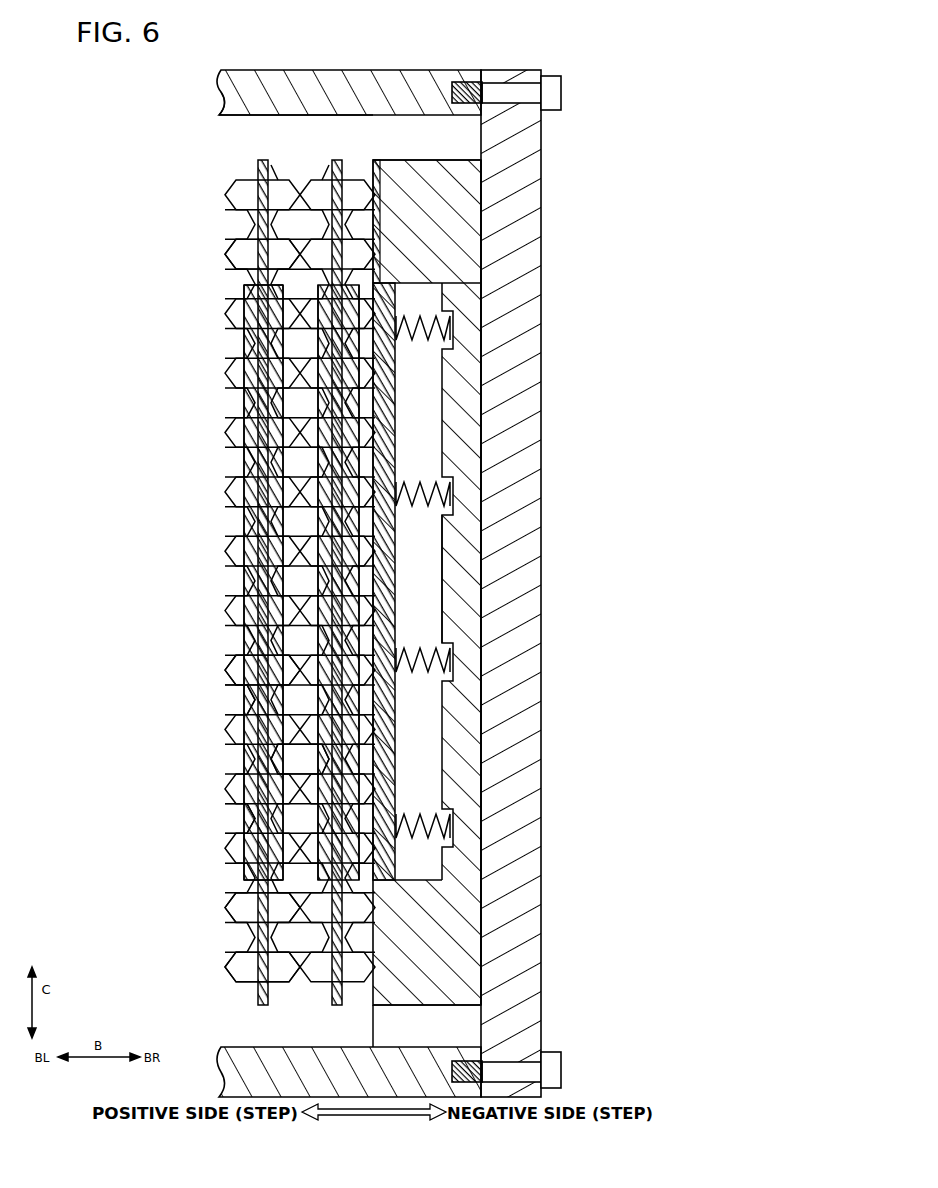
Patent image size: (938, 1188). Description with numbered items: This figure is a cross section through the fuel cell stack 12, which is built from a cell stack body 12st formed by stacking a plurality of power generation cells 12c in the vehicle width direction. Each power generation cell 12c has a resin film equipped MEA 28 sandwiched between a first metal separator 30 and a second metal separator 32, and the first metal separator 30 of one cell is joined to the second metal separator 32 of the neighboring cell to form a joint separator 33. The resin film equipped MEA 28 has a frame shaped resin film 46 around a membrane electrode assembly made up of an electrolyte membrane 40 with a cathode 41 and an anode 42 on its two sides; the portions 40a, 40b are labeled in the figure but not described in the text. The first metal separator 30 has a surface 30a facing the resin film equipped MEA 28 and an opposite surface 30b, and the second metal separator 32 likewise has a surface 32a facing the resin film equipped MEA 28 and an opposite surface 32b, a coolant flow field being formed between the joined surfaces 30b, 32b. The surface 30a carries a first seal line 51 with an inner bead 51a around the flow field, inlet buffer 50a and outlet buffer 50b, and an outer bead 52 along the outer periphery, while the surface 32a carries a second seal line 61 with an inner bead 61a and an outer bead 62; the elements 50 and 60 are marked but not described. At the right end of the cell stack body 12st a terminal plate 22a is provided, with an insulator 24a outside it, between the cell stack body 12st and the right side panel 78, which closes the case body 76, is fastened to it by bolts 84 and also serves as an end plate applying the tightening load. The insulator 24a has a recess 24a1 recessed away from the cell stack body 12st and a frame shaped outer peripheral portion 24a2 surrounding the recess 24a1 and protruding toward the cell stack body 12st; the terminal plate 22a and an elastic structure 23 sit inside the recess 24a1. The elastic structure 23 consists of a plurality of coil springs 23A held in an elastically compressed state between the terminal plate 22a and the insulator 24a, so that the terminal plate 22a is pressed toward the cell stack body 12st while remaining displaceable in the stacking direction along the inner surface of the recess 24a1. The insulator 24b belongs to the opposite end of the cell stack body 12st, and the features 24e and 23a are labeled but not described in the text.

The fuel cell stack 12 is at (551, 36).
The cell stack body 12st is at (213, 140).
The power generation cell 12c is at (225, 172).
The joint separator 33 is at (332, 40).
The second metal separator 32 is at (280, 182).
The first metal separator 30 is at (322, 172).
The surface of first metal separator 30a is at (248, 552).
The surface of first metal separator 30b is at (248, 530).
The surface of second metal separator 32a is at (248, 673).
The surface of second metal separator 32b is at (248, 711).
The resin film equipped MEA 28 is at (230, 194).
The frame shaped resin film 46 is at (243, 265).
The electrolyte membrane 40 is at (246, 375).
The first electrode 40a is at (248, 415).
The second electrode 40b is at (248, 493).
The cathode 41 is at (243, 307).
The anode 42 is at (243, 350).
The second membrane electrode assembly 50 is at (176, 628).
The inlet buffer 50a is at (248, 598).
The outlet buffer 50b is at (248, 630).
The insulating plate 60 is at (298, 768).
The terminal plate 22a is at (248, 815).
The first seal line 51 is at (173, 970).
The inner bead 51a is at (248, 898).
The outer bead 52 is at (248, 965).
The case body 76 is at (437, 70).
The right side panel 78 is at (545, 191).
The bolts 84 is at (562, 88).
The insulator 24a is at (376, 162).
The recess 24a1 is at (443, 576).
The frame shaped outer peripheral portion 24a2 is at (389, 158).
The insulator 24b is at (440, 352).
The pressing plate outer surface 24e is at (548, 336).
The elastic structure 23 is at (492, 257).
The load receiving plate 23a is at (434, 393).
The coil springs 23A is at (452, 367).
The second seal line 61 is at (597, 950).
The inner bead 61a is at (485, 906).
The outer bead 62 is at (485, 941).